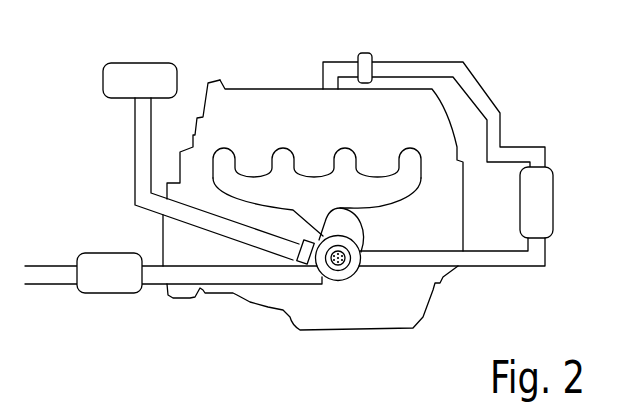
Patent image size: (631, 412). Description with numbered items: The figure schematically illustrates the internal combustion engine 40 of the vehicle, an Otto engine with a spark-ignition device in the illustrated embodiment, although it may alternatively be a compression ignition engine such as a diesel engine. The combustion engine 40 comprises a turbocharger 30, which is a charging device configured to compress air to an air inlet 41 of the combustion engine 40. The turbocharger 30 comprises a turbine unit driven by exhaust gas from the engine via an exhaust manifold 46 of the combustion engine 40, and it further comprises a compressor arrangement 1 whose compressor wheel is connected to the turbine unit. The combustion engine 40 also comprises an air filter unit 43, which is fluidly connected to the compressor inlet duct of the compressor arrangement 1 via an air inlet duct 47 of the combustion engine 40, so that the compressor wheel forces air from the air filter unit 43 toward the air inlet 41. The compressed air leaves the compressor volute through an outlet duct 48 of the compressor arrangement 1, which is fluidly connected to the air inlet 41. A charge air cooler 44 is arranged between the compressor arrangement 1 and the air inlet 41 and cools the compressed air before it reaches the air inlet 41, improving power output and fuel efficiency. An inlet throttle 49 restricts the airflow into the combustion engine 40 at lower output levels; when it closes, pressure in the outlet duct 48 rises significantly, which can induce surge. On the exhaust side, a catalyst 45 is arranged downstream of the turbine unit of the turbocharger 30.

The compressor arrangement 1 is at (353, 278).
The turbocharger 30 is at (352, 243).
The internal combustion engine 40 is at (249, 102).
The air inlet 41 is at (325, 88).
The air filter unit 43 is at (112, 80).
The charge air cooler 44 is at (540, 203).
The catalyst 45 is at (108, 268).
The exhaust manifold 46 is at (285, 170).
The air inlet duct 47 is at (138, 148).
The outlet duct 48 is at (503, 258).
The inlet throttle 49 is at (367, 54).